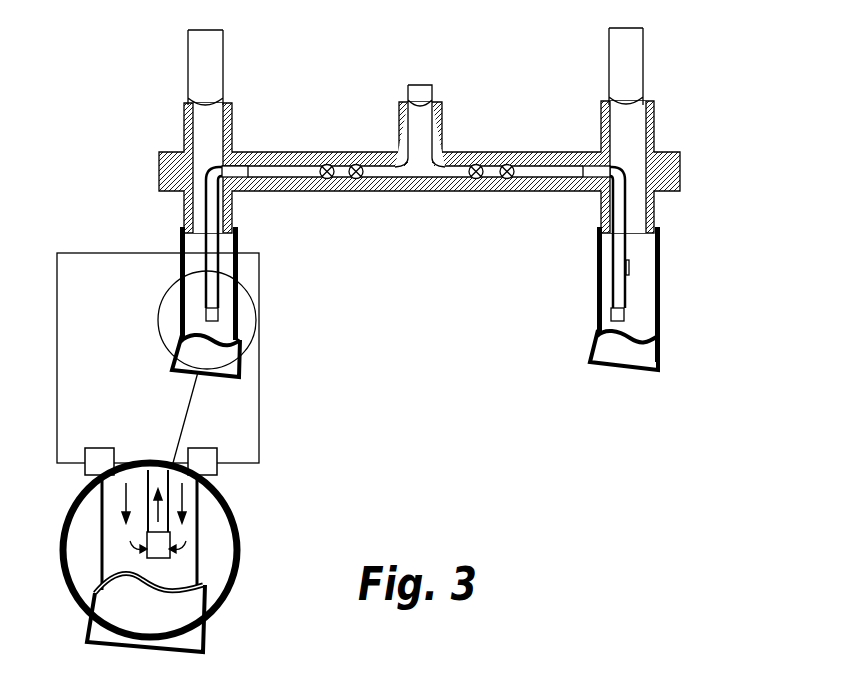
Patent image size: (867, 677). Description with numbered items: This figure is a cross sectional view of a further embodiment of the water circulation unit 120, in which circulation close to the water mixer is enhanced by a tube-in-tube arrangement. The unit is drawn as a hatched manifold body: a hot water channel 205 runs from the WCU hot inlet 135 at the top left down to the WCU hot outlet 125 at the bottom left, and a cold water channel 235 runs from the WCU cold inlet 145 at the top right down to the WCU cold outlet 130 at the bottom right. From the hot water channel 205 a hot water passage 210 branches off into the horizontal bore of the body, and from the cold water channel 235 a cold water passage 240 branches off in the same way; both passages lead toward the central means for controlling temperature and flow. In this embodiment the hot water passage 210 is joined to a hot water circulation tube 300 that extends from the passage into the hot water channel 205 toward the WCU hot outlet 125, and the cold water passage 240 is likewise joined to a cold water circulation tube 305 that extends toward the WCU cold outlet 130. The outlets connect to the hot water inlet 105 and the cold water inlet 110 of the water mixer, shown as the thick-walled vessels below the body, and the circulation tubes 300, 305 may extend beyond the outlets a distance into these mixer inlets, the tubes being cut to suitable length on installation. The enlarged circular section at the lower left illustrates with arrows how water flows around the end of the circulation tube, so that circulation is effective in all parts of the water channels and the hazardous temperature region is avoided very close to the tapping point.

The water circulation unit 120 is at (410, 119).
The WCU hot inlet 135 is at (185, 128).
The WCU hot outlet 125 is at (185, 220).
The WCU cold inlet 145 is at (655, 116).
The WCU cold outlet 130 is at (655, 217).
The hot water channel 205 is at (210, 98).
The cold water channel 235 is at (627, 97).
The hot water passage 210 is at (248, 180).
The cold water passage 240 is at (597, 192).
The hot water circulation tube 300 is at (152, 254).
The cold water circulation tube 305 is at (597, 250).
The hot water inlet 105 is at (183, 240).
The cold water inlet 110 is at (660, 243).